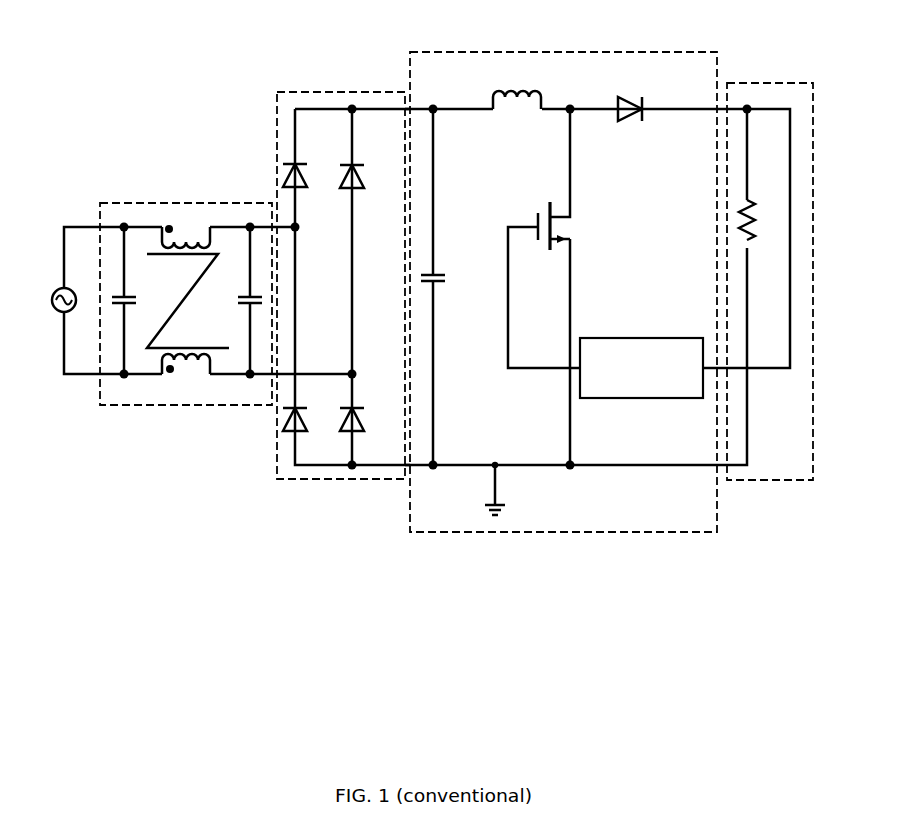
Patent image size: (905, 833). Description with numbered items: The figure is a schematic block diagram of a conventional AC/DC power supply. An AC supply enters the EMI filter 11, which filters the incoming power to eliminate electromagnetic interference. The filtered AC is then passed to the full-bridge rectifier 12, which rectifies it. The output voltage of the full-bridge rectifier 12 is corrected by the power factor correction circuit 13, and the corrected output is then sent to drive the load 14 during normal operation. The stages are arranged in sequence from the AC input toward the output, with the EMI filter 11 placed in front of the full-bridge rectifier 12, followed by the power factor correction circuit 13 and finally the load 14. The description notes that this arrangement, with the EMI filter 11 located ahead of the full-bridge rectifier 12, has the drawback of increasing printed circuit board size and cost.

The EMI filter 11 is at (147, 203).
The full-bridge rectifier 12 is at (298, 92).
The power factor correction circuit 13 is at (480, 52).
The load 14 is at (770, 83).